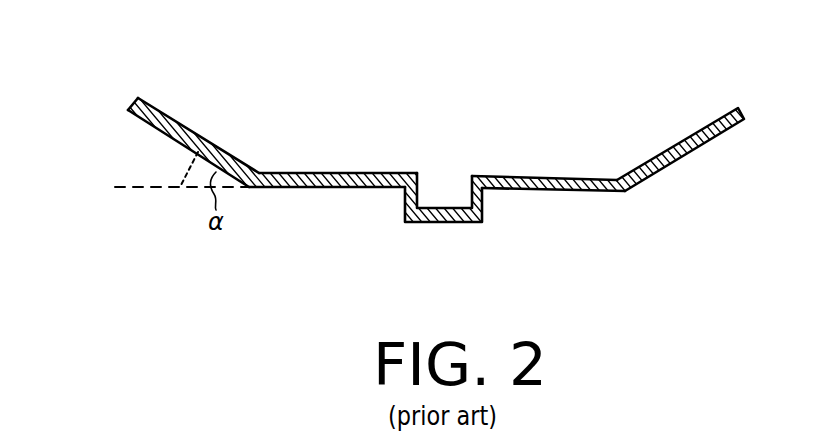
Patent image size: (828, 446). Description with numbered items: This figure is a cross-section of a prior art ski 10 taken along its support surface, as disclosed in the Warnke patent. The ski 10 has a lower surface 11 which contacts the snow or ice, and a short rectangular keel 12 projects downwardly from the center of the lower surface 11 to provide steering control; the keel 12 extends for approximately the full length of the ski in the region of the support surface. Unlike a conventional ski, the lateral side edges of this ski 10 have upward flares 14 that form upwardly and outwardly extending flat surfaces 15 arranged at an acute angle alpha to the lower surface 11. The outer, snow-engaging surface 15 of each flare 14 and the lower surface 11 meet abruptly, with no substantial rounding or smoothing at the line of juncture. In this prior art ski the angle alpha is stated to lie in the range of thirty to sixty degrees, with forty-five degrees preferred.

The ski 10 is at (324, 143).
The lower surface 11 is at (613, 191).
The keel 12 is at (482, 203).
The upward flares 14 is at (185, 125).
The flat surfaces 15 is at (150, 126).